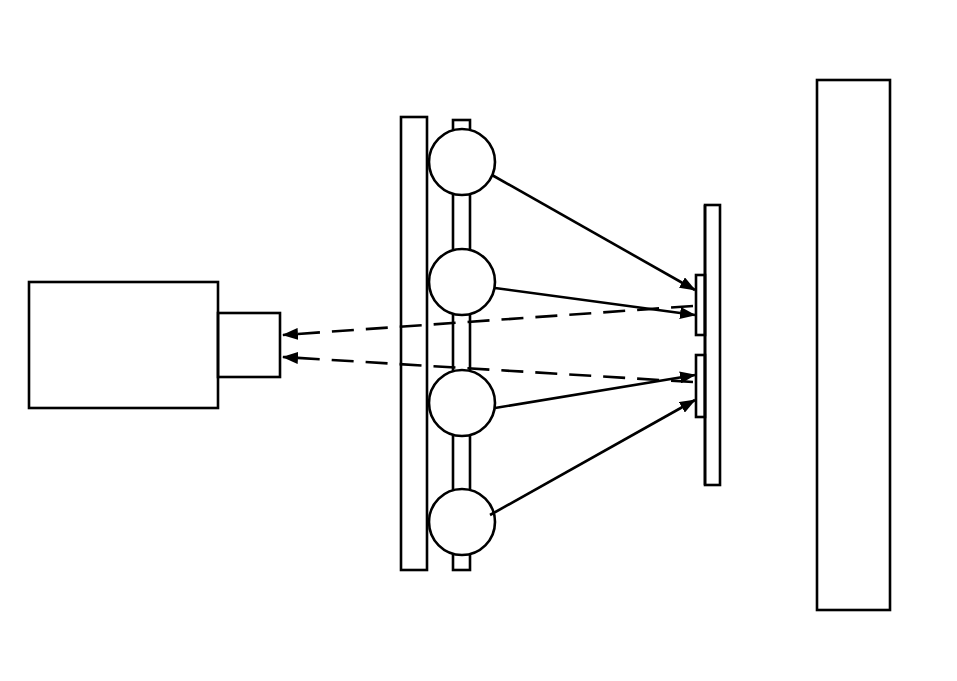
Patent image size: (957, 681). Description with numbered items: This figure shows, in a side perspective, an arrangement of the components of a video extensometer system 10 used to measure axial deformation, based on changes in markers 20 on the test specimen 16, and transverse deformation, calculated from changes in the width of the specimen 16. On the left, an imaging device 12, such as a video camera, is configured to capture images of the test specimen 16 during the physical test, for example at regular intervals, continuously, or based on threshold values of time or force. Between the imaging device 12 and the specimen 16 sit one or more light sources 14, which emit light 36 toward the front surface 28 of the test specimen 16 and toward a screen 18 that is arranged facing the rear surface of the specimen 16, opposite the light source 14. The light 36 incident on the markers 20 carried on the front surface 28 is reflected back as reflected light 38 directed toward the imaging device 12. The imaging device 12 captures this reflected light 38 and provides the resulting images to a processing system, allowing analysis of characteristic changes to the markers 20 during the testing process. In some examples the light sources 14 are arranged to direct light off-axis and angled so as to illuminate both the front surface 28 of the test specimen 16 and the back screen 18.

The video extensometer system 10 is at (193, 53).
The imaging device 12 is at (155, 282).
The light source 14 is at (401, 117).
The test specimen 16 is at (720, 232).
The screen 18 is at (869, 357).
The markers 20 is at (697, 276).
The front surface 28 is at (702, 222).
The light 36 is at (517, 189).
The reflected light 38 is at (370, 327).